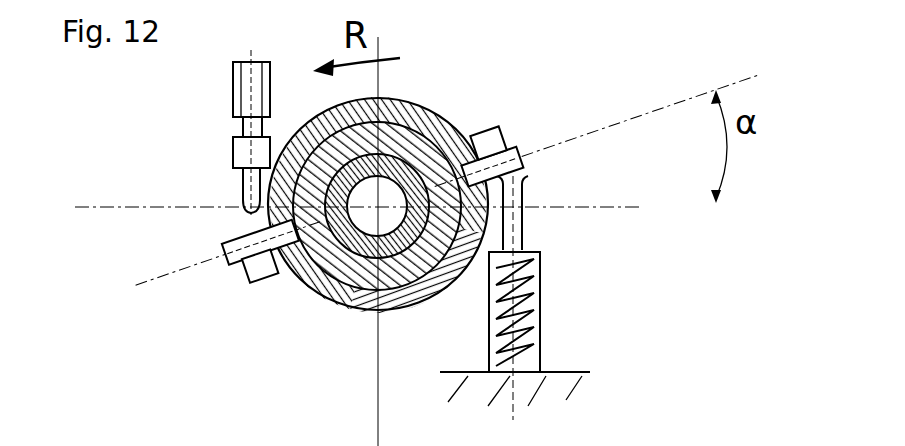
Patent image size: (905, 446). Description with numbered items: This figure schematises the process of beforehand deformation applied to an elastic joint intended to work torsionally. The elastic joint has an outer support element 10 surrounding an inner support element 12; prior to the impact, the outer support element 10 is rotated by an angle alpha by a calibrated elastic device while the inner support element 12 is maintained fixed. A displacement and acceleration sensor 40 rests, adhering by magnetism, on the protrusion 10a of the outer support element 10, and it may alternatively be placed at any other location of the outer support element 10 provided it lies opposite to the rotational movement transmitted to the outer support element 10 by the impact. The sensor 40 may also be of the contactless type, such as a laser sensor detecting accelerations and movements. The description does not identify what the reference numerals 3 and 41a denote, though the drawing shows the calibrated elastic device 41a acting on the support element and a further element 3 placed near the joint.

The sensor unit 3 is at (212, 126).
The outer support element 10 is at (350, 292).
The protrusion 10a is at (525, 160).
The inner support element 12 is at (400, 178).
The displacement and acceleration sensor 40 is at (502, 129).
The return spring 41a is at (545, 297).